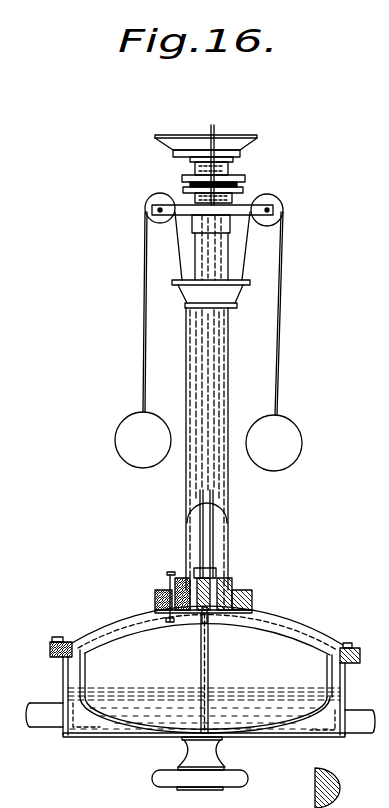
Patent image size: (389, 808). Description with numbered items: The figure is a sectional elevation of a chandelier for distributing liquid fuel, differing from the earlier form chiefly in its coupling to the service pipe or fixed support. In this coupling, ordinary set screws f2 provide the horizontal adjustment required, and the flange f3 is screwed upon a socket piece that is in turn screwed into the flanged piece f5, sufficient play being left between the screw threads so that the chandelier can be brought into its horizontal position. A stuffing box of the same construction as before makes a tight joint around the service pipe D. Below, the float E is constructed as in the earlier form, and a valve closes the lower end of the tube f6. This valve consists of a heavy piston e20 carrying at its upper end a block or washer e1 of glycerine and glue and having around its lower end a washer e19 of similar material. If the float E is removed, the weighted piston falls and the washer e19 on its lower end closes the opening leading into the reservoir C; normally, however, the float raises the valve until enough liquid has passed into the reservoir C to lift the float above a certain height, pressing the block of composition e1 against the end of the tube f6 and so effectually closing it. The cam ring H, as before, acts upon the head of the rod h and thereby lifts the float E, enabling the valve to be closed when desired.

The flange f3 is at (187, 183).
The flanged piece f5 is at (242, 176).
The set screws f2 is at (243, 184).
The service pipe D is at (227, 347).
The tube f6 is at (213, 530).
The block or washer e1 is at (220, 568).
The heavy piston e20 is at (230, 585).
The cam ring H is at (238, 591).
The rod h is at (170, 580).
The float E is at (123, 633).
The reservoir C is at (303, 634).
The washer e19 is at (200, 620).